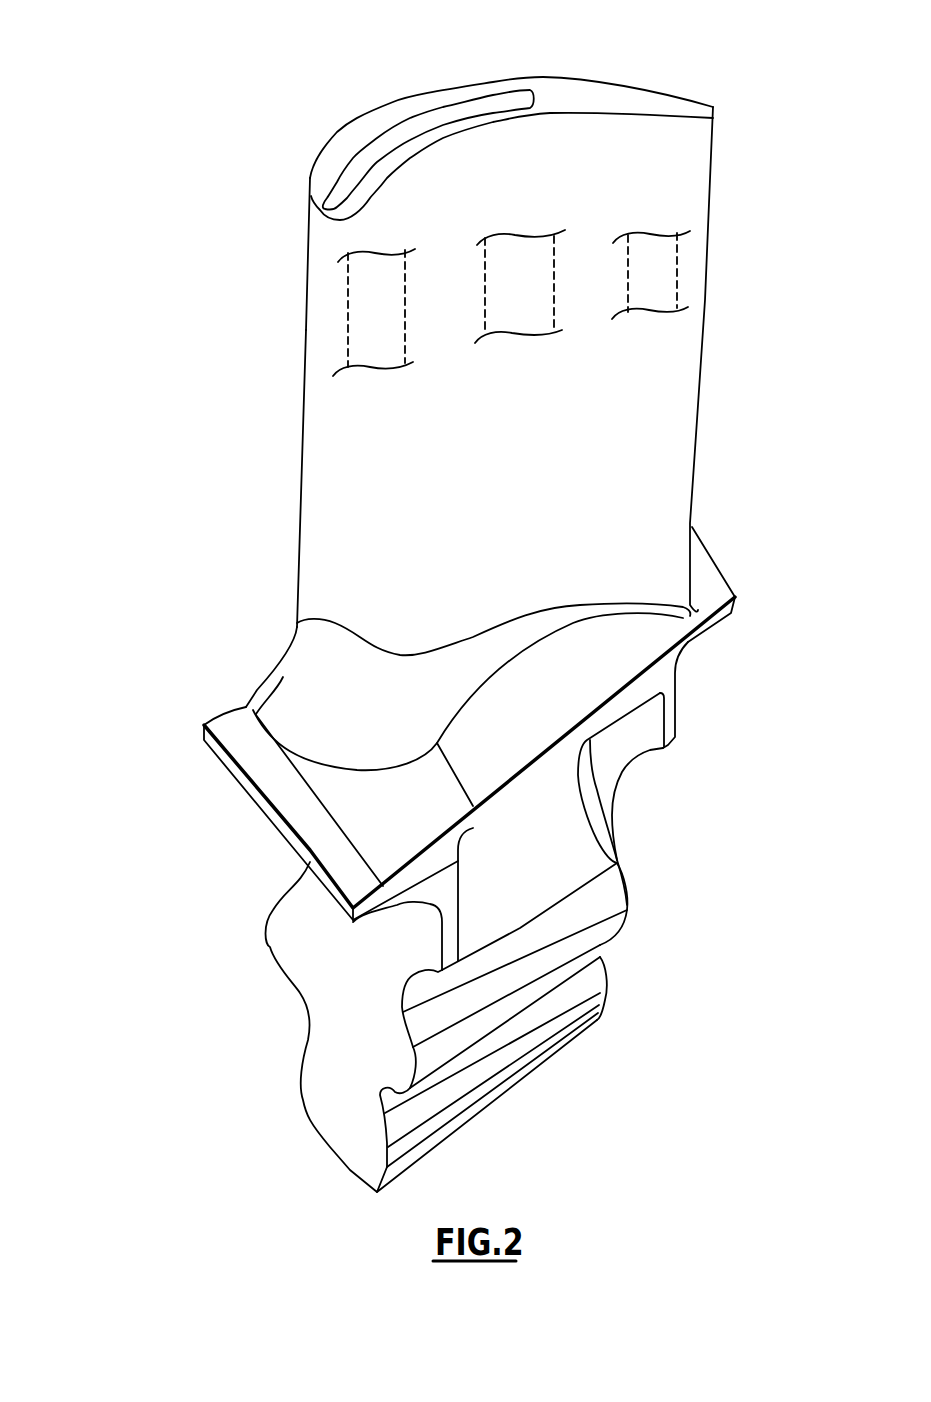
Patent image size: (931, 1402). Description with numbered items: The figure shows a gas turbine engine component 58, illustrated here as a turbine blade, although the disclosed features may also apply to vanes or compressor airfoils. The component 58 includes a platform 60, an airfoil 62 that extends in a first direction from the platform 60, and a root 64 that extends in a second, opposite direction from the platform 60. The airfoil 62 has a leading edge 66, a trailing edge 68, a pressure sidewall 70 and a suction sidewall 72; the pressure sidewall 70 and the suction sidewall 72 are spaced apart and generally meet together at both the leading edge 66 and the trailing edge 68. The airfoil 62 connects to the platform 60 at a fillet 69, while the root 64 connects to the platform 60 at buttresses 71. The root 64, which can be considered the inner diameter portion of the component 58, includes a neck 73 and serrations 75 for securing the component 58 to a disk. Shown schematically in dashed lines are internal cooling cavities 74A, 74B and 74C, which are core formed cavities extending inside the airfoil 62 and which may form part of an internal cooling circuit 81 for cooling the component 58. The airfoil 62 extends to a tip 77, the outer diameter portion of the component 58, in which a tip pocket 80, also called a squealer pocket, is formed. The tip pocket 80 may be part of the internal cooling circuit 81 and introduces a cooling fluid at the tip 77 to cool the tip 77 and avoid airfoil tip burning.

The component 58 is at (434, 597).
The platform 60 is at (486, 722).
The airfoil 62 is at (498, 314).
The root 64 is at (479, 1027).
The leading edge 66 is at (267, 478).
The trailing edge 68 is at (729, 359).
The fillet 69 is at (459, 744).
The pressure sidewall 70 is at (498, 367).
The buttresses 71 is at (549, 830).
The suction sidewall 72 is at (510, 111).
The neck 73 is at (573, 801).
The internal cooling cavity 74A is at (385, 331).
The internal cooling cavity 74B is at (526, 310).
The internal cooling cavity 74C is at (643, 296).
The serrations 75 is at (538, 1027).
The tip 77 is at (512, 121).
The tip pocket 80 is at (420, 144).
The internal cooling circuit 81 is at (286, 254).